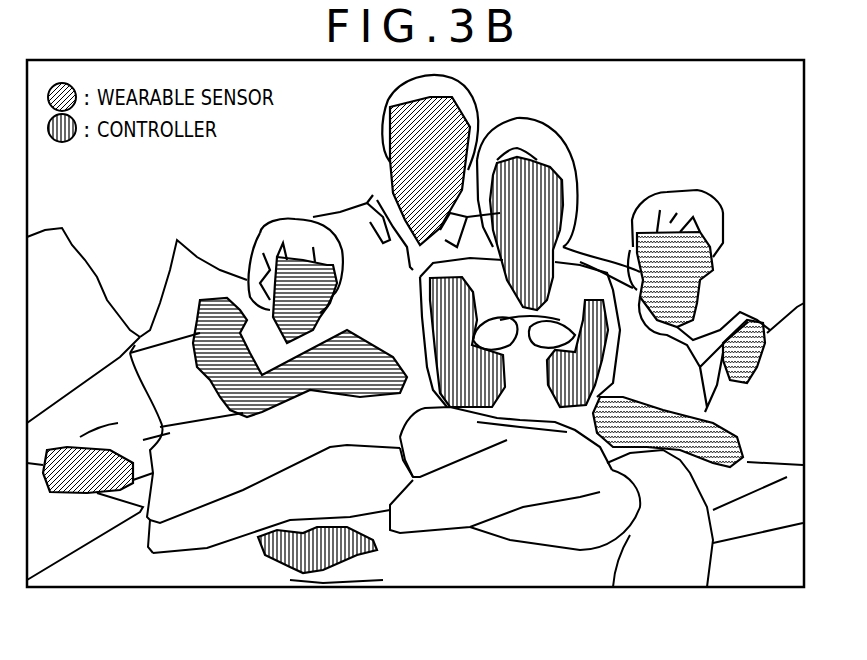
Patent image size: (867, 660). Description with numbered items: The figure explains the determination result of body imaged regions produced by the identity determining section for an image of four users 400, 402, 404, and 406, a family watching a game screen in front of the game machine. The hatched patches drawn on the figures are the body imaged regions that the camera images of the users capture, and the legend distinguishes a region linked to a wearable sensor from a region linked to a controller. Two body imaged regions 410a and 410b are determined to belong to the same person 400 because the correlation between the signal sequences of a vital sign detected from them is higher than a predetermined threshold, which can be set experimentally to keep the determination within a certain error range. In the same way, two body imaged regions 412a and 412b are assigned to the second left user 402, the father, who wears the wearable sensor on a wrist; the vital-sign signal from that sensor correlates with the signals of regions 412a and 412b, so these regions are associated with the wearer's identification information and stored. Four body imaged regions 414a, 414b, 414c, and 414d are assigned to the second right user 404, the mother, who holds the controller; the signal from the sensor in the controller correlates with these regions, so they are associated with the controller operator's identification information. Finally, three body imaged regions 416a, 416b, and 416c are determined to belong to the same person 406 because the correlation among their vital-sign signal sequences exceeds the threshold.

The user 400 is at (263, 237).
The user (father) 402 is at (383, 121).
The user (mother) 404 is at (540, 127).
The user 406 is at (690, 192).
The body imaged region 410a is at (295, 250).
The body imaged region 410b is at (197, 373).
The body imaged region 412a is at (390, 185).
The body imaged region 412b is at (67, 497).
The body imaged region 414a is at (565, 168).
The body imaged region 414b is at (500, 405).
The body imaged region 414c is at (357, 557).
The body imaged region 414d is at (535, 405).
The body imaged region 416a is at (680, 232).
The body imaged region 416b is at (748, 322).
The body imaged region 416c is at (723, 473).